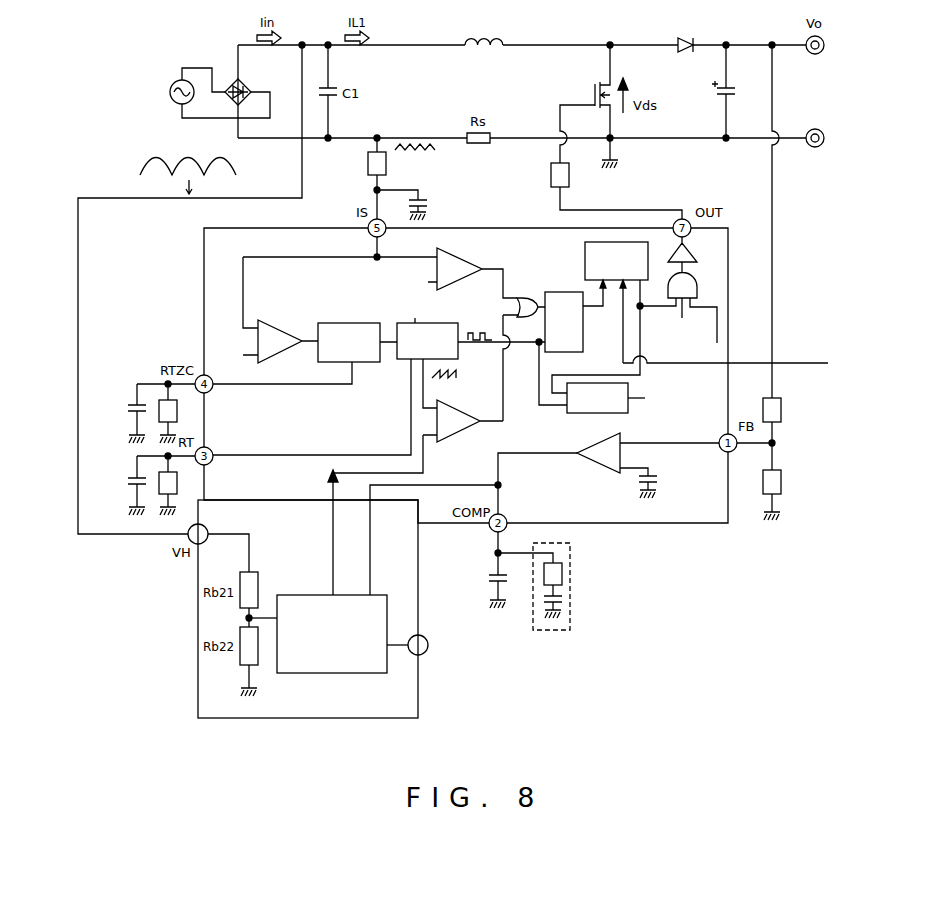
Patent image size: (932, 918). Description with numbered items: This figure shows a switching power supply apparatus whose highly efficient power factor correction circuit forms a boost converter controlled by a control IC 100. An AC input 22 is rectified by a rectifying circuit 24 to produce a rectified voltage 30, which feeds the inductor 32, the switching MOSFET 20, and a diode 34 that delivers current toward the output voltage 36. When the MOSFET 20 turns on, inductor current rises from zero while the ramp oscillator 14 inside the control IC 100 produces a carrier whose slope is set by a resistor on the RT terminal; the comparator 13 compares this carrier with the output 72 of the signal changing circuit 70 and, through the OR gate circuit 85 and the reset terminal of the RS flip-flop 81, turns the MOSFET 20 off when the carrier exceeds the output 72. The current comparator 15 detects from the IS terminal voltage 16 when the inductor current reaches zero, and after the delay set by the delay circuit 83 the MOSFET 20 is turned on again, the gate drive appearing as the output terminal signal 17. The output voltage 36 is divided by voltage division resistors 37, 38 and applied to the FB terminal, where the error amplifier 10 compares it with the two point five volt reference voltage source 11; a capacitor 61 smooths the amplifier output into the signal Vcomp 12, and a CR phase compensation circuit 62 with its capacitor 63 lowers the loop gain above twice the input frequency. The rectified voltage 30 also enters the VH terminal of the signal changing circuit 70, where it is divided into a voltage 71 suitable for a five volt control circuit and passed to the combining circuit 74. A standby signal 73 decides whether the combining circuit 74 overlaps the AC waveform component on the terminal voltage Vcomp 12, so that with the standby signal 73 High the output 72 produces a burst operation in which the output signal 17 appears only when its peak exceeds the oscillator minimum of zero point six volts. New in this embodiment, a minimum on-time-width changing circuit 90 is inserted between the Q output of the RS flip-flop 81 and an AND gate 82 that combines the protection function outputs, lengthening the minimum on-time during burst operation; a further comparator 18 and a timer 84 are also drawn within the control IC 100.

The error amplifier 10 is at (602, 444).
The reference voltage source 11 is at (652, 478).
The COMP terminal voltage 12 is at (548, 455).
The comparator 13 is at (477, 433).
The ramp oscillator 14 is at (400, 360).
The current comparator 15 is at (278, 358).
The voltage in IS terminal 16 is at (322, 258).
The OUT terminal output signal 17 is at (638, 210).
The overcurrent comparator 18 is at (470, 254).
The MOSFET Q1 20 is at (597, 106).
The AC power source 22 is at (170, 96).
The rectifying circuit 24 is at (242, 80).
The voltage obtained by rectifying AC input voltage 30 is at (302, 44).
The inductor L1 32 is at (486, 49).
The diode D1 34 is at (686, 53).
The output voltage 36 is at (771, 44).
The voltage division resistor R1 37 is at (781, 404).
The voltage division resistor R2 38 is at (781, 476).
The capacitor 61 is at (485, 585).
The phase compensation circuit 62 is at (565, 576).
The compensation capacitor 63 is at (565, 600).
The COMP signal changing circuit 70 is at (198, 582).
The voltage 71 is at (250, 617).
The output of the AC-COMP combining circuit 72 is at (375, 515).
The standby signal 73 is at (657, 486).
The AC-COMP combining circuit 74 is at (340, 673).
The RS flip-flop 81 is at (583, 344).
The AND gate 82 is at (697, 287).
The delay circuit 83 is at (353, 363).
The timer 84 is at (625, 413).
The OR gate circuit 85 is at (528, 297).
The minimum on-time-width changing circuit 90 is at (615, 254).
The control IC 100 is at (204, 246).